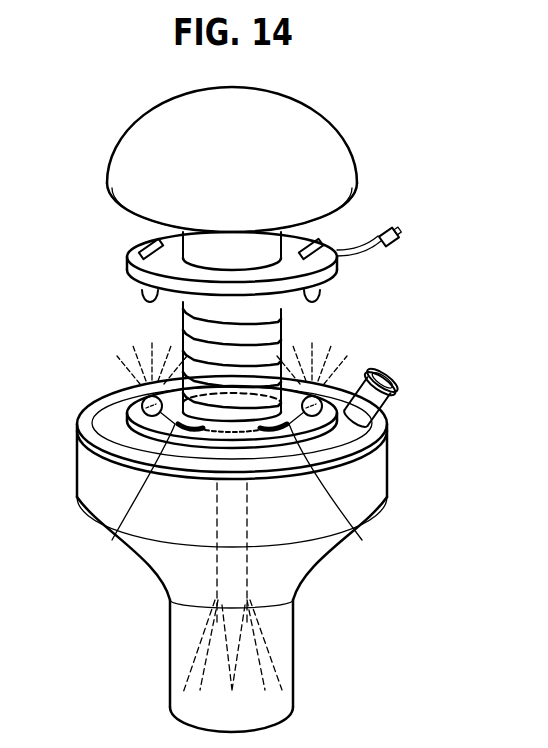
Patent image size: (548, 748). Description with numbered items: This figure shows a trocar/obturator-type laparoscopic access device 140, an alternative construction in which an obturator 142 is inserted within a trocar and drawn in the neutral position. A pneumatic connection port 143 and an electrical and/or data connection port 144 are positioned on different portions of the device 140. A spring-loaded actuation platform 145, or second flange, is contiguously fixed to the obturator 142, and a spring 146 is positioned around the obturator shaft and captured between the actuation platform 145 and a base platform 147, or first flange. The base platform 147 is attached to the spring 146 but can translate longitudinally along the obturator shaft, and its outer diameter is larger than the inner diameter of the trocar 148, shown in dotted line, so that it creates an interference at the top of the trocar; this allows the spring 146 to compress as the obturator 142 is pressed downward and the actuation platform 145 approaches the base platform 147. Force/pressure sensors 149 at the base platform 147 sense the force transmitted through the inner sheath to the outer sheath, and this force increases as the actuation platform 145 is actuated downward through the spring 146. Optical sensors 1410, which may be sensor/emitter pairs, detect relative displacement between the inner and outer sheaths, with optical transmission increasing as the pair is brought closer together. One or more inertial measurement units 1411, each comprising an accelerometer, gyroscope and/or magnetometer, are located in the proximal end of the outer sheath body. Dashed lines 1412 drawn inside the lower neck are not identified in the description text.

The trocar/obturator-type laparoscopic access device 140 is at (466, 311).
The obturator 142 is at (335, 148).
The pneumatic connection port 143 is at (396, 378).
The electrical and/or data connection port 144 is at (398, 242).
The spring-loaded actuation platform 145 is at (337, 264).
The spring 146 is at (178, 337).
The base platform 147 is at (137, 430).
The inner diameter of the trocar 148 is at (170, 400).
The force/pressure sensors 149 is at (113, 541).
The optical sensors 1410 is at (318, 298).
The inertial measurement units 1411 is at (145, 248).
The flow path 1412 is at (250, 650).